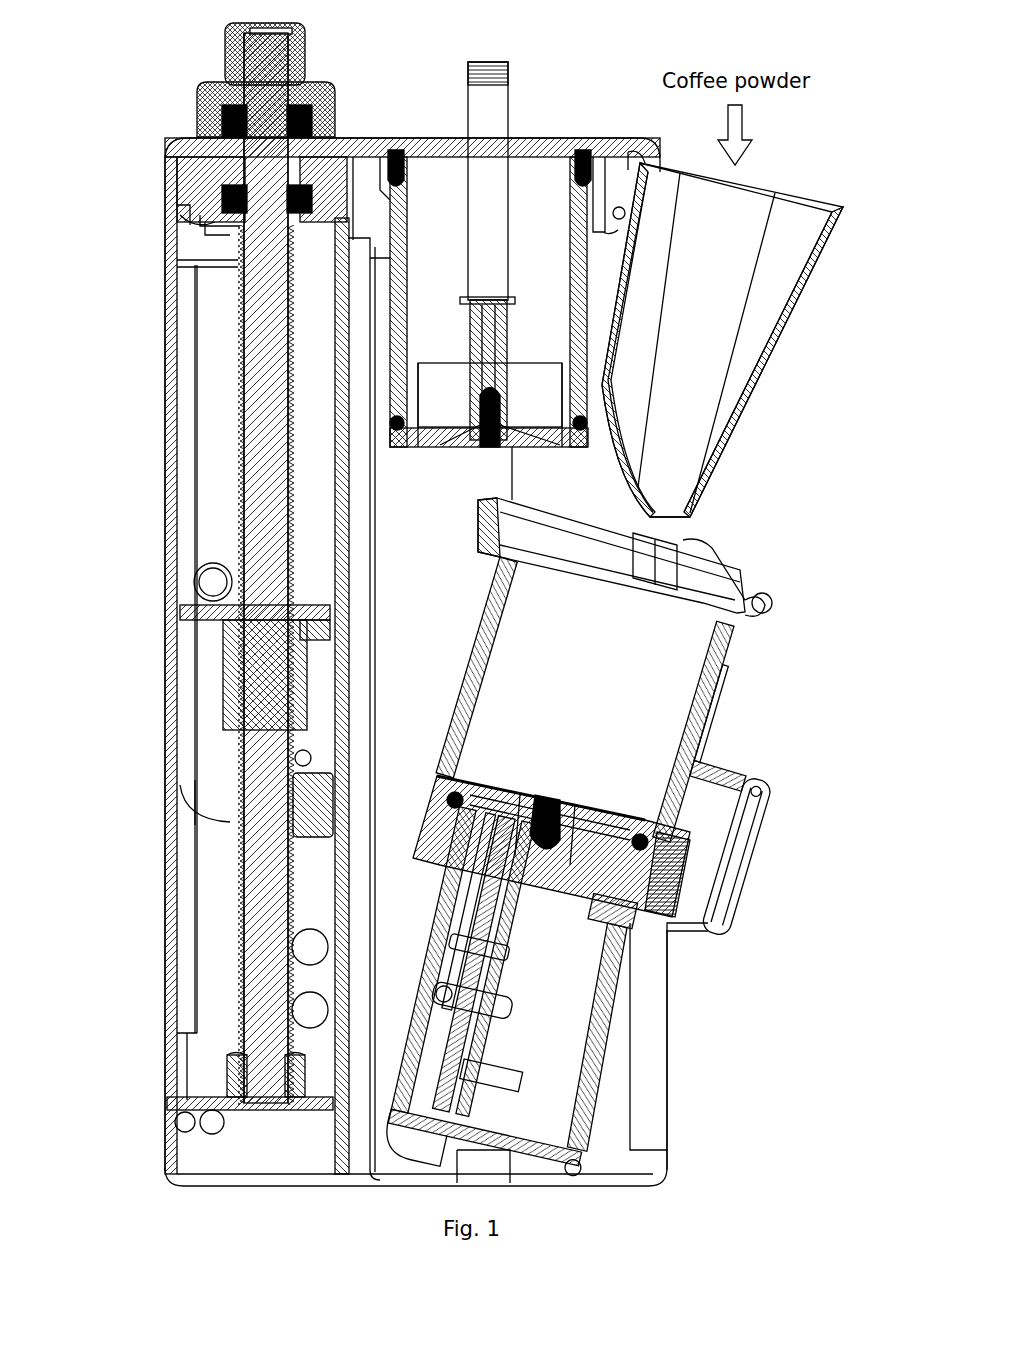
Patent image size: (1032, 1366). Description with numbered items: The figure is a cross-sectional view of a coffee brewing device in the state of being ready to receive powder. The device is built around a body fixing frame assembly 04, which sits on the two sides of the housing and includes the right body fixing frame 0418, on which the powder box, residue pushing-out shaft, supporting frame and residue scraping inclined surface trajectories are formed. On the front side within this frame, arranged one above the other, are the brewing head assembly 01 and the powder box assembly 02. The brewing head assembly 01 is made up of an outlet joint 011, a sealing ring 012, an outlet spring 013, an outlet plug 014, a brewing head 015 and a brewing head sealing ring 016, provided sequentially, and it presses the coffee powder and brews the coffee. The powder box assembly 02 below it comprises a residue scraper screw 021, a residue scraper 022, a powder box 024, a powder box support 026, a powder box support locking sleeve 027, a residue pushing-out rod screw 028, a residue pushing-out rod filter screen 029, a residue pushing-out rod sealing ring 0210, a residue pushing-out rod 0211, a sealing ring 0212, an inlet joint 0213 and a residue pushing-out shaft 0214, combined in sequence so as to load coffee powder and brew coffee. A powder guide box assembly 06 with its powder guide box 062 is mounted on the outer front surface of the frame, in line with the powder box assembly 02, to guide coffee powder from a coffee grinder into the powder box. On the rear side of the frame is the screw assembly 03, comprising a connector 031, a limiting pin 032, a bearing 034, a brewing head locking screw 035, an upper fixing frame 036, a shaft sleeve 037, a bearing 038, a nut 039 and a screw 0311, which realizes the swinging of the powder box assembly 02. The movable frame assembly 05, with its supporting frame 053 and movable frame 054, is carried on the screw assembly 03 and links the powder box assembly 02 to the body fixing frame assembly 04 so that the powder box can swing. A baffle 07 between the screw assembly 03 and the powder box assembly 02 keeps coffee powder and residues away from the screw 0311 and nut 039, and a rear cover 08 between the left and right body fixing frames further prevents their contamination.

The brewing head assembly 01 is at (588, 260).
The outlet joint 011 is at (508, 76).
The sealing ring 012 is at (498, 300).
The outlet spring 013 is at (560, 365).
The outlet plug 014 is at (590, 385).
The brewing head 015 is at (582, 428).
The brewing head sealing ring 016 is at (545, 375).
The powder box assembly 02 is at (705, 604).
The residue scraper screw 021 is at (705, 548).
The residue scraper 022 is at (738, 578).
The powder box 024 is at (755, 630).
The powder box support 026 is at (718, 690).
The powder box support locking sleeve 027 is at (700, 836).
The residue pushing-out rod screw 028 is at (545, 778).
The residue pushing-out rod filter screen 029 is at (560, 796).
The residue pushing-out rod sealing ring 0210 is at (762, 800).
The residue pushing-out rod 0211 is at (655, 915).
The sealing ring 0212 is at (605, 905).
The inlet joint 0213 is at (525, 982).
The residue pushing-out shaft 0214 is at (598, 1112).
The screw assembly 03 is at (240, 720).
The connector 031 is at (225, 76).
The limiting pin 032 is at (200, 100).
The bearing 034 is at (215, 128).
The brewing head locking screw 035 is at (398, 140).
The upper fixing frame 036 is at (222, 152).
The shaft sleeve 037 is at (230, 182).
The bearing 038 is at (215, 213).
The nut 039 is at (230, 665).
The screw 0311 is at (240, 688).
The body fixing frame assembly 04 is at (660, 1056).
The right body fixing frame 0418 is at (660, 1040).
The movable frame assembly 05 is at (200, 590).
The supporting frame 053 is at (225, 806).
The movable frame 054 is at (215, 606).
The powder guide box assembly 06 is at (700, 500).
The powder guide box 062 is at (700, 470).
The baffle 07 is at (335, 546).
The rear cover 08 is at (168, 248).